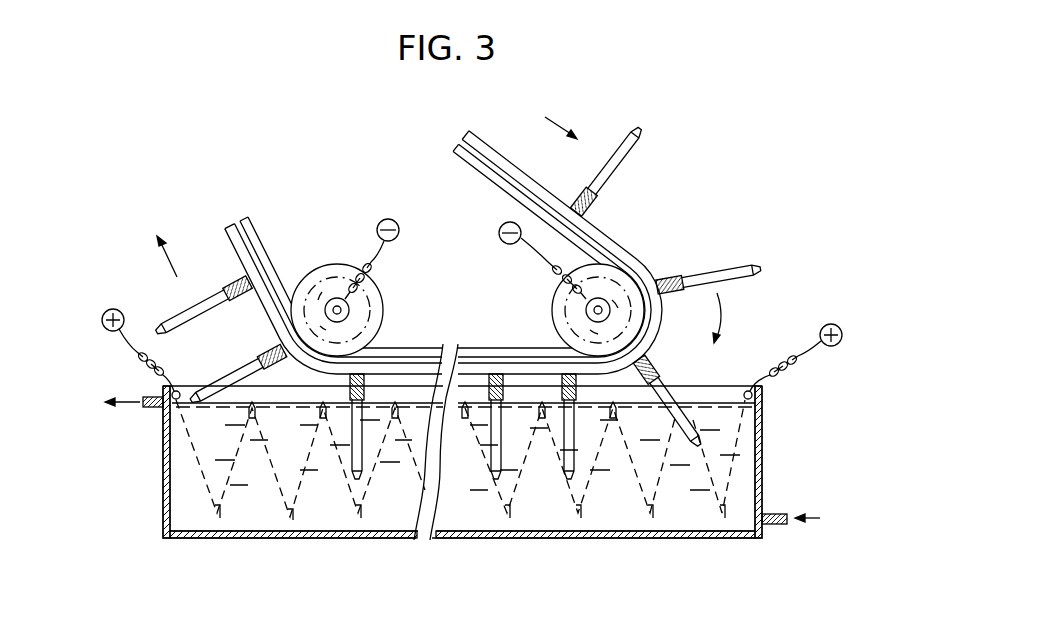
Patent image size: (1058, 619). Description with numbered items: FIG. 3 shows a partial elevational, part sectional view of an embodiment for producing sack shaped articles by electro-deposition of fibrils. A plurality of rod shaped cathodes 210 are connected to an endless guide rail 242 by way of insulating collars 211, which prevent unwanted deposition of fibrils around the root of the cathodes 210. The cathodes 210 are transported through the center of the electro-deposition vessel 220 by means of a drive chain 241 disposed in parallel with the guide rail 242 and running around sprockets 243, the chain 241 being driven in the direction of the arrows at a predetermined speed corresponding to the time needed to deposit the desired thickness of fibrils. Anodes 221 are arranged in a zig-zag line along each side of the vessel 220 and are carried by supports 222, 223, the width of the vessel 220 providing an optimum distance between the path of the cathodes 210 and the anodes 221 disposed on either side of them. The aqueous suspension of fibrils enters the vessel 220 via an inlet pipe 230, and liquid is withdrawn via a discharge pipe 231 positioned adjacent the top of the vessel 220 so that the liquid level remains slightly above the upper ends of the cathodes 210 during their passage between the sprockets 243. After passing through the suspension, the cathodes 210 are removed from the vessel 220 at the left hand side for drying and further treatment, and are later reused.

The rod shaped cathodes 210 is at (182, 306).
The insulating collars 211 is at (597, 208).
The electro-deposition vessel 220 is at (163, 458).
The anodes 221 is at (742, 421).
The anode supports 222 is at (252, 418).
The anode supports 223 is at (290, 521).
The inlet pipe 230 is at (775, 515).
The discharge pipe 231 is at (148, 409).
The drive chain 241 is at (262, 242).
The endless guide rail 242 is at (233, 240).
The sprockets 243 is at (385, 308).